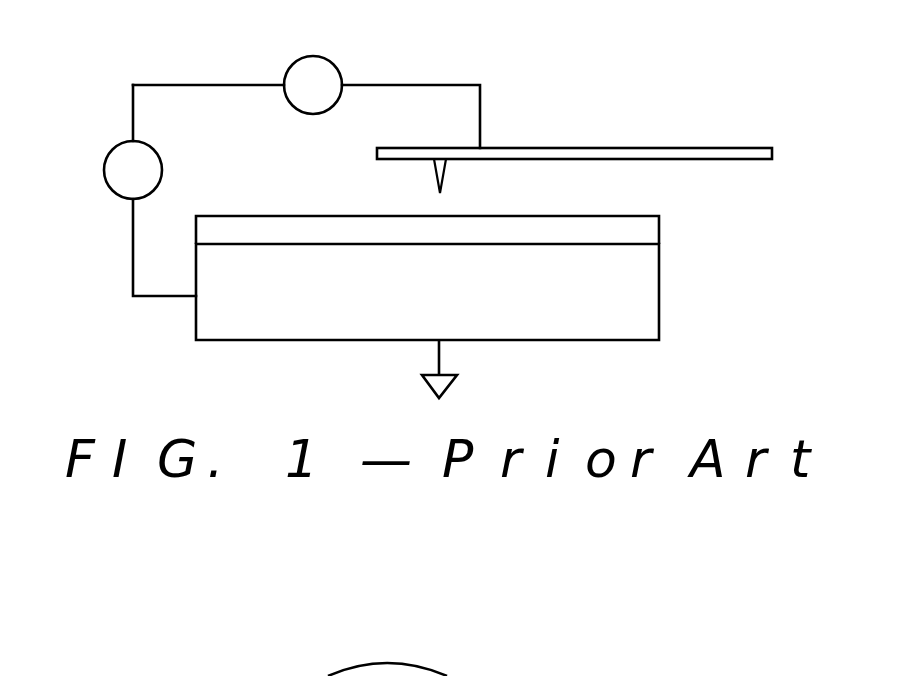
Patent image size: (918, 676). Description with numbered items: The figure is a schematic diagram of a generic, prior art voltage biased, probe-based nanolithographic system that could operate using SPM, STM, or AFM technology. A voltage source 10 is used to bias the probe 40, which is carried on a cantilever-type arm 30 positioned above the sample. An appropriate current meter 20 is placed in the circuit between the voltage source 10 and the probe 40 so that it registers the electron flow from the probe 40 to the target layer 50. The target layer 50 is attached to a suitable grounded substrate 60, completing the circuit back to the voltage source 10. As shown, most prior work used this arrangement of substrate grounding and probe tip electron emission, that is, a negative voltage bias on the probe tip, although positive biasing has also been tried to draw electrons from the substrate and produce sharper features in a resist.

The voltage source 10 is at (103, 172).
The current meter 20 is at (312, 56).
The cantilever 30 is at (623, 146).
The probe 40 is at (435, 183).
The target layer 50 is at (637, 232).
The grounded substrate 60 is at (637, 300).